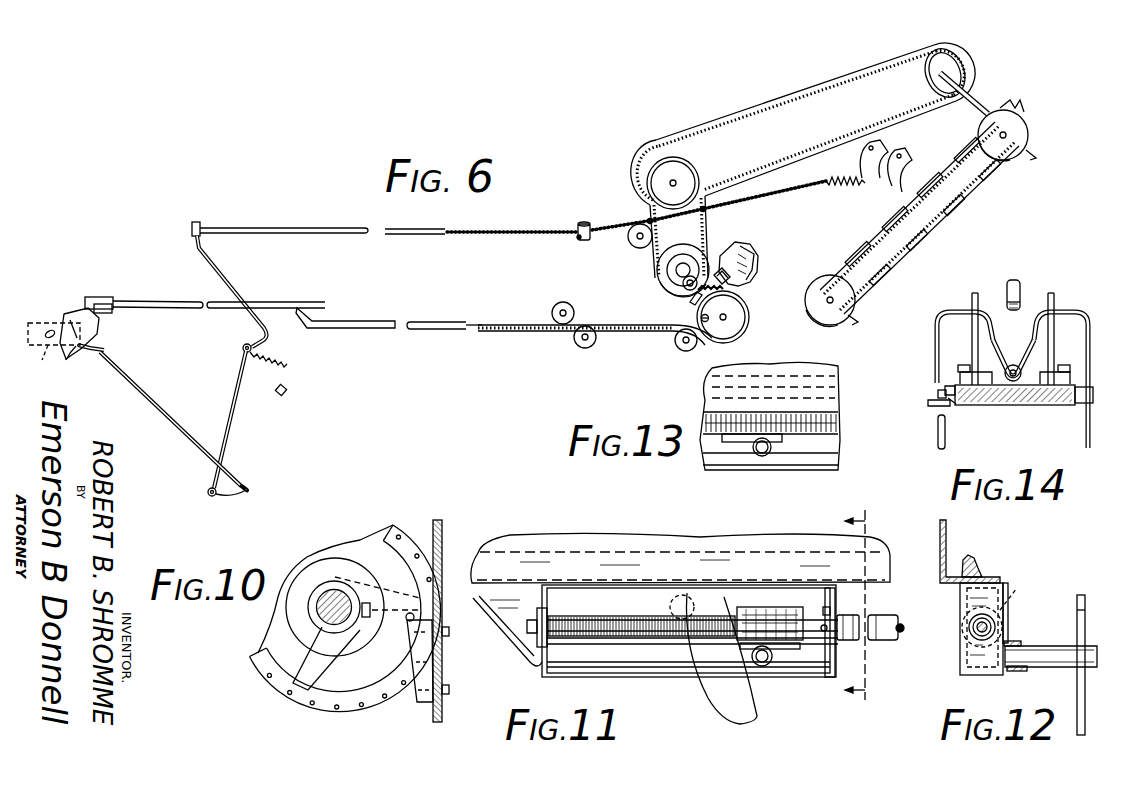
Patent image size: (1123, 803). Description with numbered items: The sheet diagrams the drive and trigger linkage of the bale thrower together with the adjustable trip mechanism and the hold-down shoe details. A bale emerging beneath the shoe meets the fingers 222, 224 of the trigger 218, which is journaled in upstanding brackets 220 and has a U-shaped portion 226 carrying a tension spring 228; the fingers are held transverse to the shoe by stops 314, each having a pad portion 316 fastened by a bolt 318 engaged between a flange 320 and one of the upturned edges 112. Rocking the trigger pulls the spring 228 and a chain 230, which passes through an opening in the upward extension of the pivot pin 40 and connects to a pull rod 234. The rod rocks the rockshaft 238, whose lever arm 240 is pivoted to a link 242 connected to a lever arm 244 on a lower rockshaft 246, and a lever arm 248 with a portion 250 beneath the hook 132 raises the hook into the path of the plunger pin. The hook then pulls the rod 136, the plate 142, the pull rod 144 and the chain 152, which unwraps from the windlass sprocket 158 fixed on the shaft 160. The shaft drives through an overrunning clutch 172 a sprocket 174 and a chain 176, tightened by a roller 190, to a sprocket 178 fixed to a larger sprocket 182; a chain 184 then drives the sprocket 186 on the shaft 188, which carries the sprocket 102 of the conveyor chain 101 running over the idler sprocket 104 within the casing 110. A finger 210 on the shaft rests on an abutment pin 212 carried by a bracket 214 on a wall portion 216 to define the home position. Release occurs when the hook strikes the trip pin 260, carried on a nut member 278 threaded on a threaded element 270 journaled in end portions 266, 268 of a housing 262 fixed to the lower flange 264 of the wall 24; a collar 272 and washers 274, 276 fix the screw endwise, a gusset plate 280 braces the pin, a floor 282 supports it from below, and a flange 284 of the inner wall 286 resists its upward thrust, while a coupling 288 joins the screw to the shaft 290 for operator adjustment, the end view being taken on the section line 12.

In FIG. 6, the pivot pin 40 is at (574, 235).
In FIG. 6, the chain 101 is at (870, 302).
In FIG. 6, the sprocket 102 is at (1030, 132).
In FIG. 6, the idler sprocket 104 is at (836, 322).
In FIG. 14, the casing 110 is at (1016, 412).
In FIG. 14, the upturned and inturned edges 112 is at (970, 408).
In FIG. 6, the hook 132 is at (106, 330).
In FIG. 11, the hook 132 is at (722, 716).
In FIG. 12, the hook 132 is at (1067, 598).
In FIG. 6, the rod 136 is at (195, 298).
In FIG. 6, the plate 142 is at (322, 315).
In FIG. 6, the pull rod 144 is at (460, 303).
In FIG. 6, the chain 152 is at (652, 340).
In FIG. 6, the windlass sprocket 158 is at (750, 318).
In FIG. 10, the shaft 160 is at (327, 603).
In FIG. 6, the overrunning clutch 172 is at (665, 282).
In FIG. 10, the overrunning clutch 172 is at (360, 540).
In FIG. 10, the sprocket 174 is at (347, 700).
In FIG. 6, the chain 176 is at (708, 226).
In FIG. 10, the chain 176 is at (287, 697).
In FIG. 6, the sprocket 178 is at (690, 172).
In FIG. 6, the sprocket 182 is at (706, 188).
In FIG. 6, the chain 184 is at (826, 100).
In FIG. 6, the sprocket 186 is at (965, 63).
In FIG. 6, the shaft 188 is at (978, 95).
In FIG. 6, the tightener roller 190 is at (632, 244).
In FIG. 6, the finger 210 is at (688, 304).
In FIG. 10, the finger 210 is at (310, 662).
In FIG. 6, the abutment pin 212 is at (724, 268).
In FIG. 10, the abutment pin 212 is at (407, 622).
In FIG. 6, the bracket 214 is at (750, 284).
In FIG. 10, the bracket 214 is at (397, 670).
In FIG. 6, the wall portion 216 is at (758, 256).
In FIG. 10, the wall portion 216 is at (442, 535).
In FIG. 6, the trigger 218 is at (908, 150).
In FIG. 14, the trigger 218 is at (1078, 262).
In FIG. 14, the upstanding brackets 220 is at (972, 300).
In FIG. 14, the finger 222 is at (1048, 300).
In FIG. 14, the finger 224 is at (936, 430).
In FIG. 14, the U-shaped portion 226 is at (1001, 362).
In FIG. 6, the tension spring 228 is at (860, 184).
In FIG. 14, the tension spring 228 is at (1018, 382).
In FIG. 6, the chain 230 is at (490, 227).
In FIG. 6, the pull rod 234 is at (365, 228).
In FIG. 6, the rockshaft 238 is at (260, 268).
In FIG. 6, the lever arm 240 is at (256, 337).
In FIG. 6, the pull rod or link 242 is at (232, 434).
In FIG. 6, the lever arm 244 is at (238, 496).
In FIG. 6, the rockshaft 246 is at (183, 425).
In FIG. 6, the lever arm 248 is at (100, 358).
In FIG. 6, the portion 250 is at (78, 350).
In FIG. 6, the trip pin 260 is at (48, 350).
In FIG. 13, the trip pin 260 is at (770, 455).
In FIG. 11, the trip pin 260 is at (766, 668).
In FIG. 12, the trip pin 260 is at (1033, 661).
In FIG. 11, the housing 262 is at (630, 692).
In FIG. 12, the housing 262 is at (957, 650).
In FIG. 11, the lower flange 264 is at (520, 580).
In FIG. 12, the lower flange 264 is at (1005, 582).
In FIG. 11, the end portion 266 is at (540, 670).
In FIG. 11, the end portion 268 is at (832, 656).
In FIG. 12, the end portion 268 is at (975, 593).
In FIG. 11, the threaded element 270 is at (628, 638).
In FIG. 11, the collar 272 is at (865, 640).
In FIG. 11, the washer 274 is at (826, 610).
In FIG. 11, the washer 276 is at (553, 618).
In FIG. 11, the nut member 278 is at (748, 607).
In FIG. 12, the nut member 278 is at (1020, 593).
In FIG. 13, the gusset plate 280 is at (748, 444).
In FIG. 11, the gusset plate 280 is at (785, 655).
In FIG. 11, the floor 282 is at (645, 672).
In FIG. 12, the floor 282 is at (1002, 678).
In FIG. 12, the flange 284 is at (1010, 643).
In FIG. 12, the inner wall 286 is at (1010, 634).
In FIG. 11, the coupling 288 is at (885, 616).
In FIG. 11, the shaft 290 is at (905, 628).
In FIG. 12, the shaft 290 is at (968, 627).
In FIG. 14, the stop 314 is at (922, 404).
In FIG. 14, the pad portion 316 is at (945, 402).
In FIG. 14, the bolt 318 is at (935, 393).
In FIG. 14, the flange 320 is at (948, 386).
In FIG. 12, the wall 24 is at (943, 547).
In FIG. 11, the section line 12 is at (868, 605).